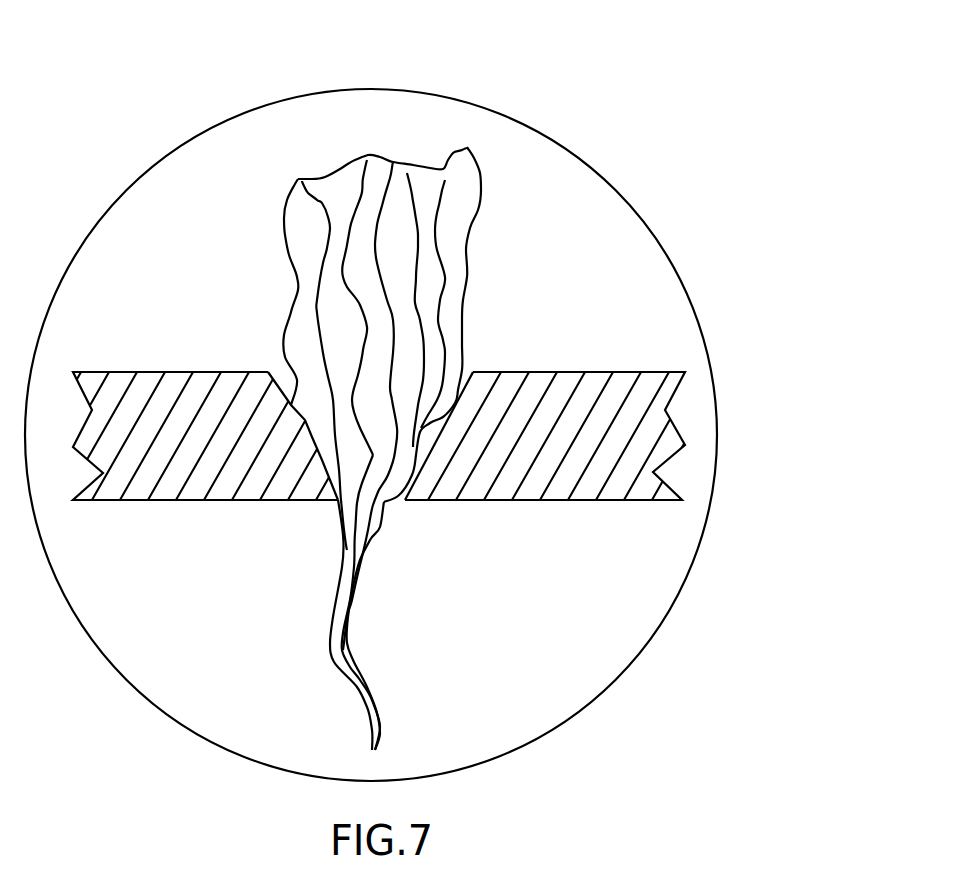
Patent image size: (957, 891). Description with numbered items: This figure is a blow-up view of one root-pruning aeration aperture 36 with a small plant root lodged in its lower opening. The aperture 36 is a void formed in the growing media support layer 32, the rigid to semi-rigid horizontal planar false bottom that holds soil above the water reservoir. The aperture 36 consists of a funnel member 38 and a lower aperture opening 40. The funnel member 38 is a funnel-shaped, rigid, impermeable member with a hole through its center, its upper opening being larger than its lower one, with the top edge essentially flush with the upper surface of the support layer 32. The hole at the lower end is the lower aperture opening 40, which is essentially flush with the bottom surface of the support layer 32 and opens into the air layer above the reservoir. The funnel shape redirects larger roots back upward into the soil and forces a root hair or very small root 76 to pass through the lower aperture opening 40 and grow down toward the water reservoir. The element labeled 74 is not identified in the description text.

The root-pruning aeration aperture 36 is at (520, 124).
The plasma arc / flame 74 is at (321, 384).
The growing media support layer 32 is at (190, 460).
The funnel member 38 is at (283, 488).
The lower aperture opening 40 is at (393, 500).
The root hair or very small root 76 is at (338, 653).